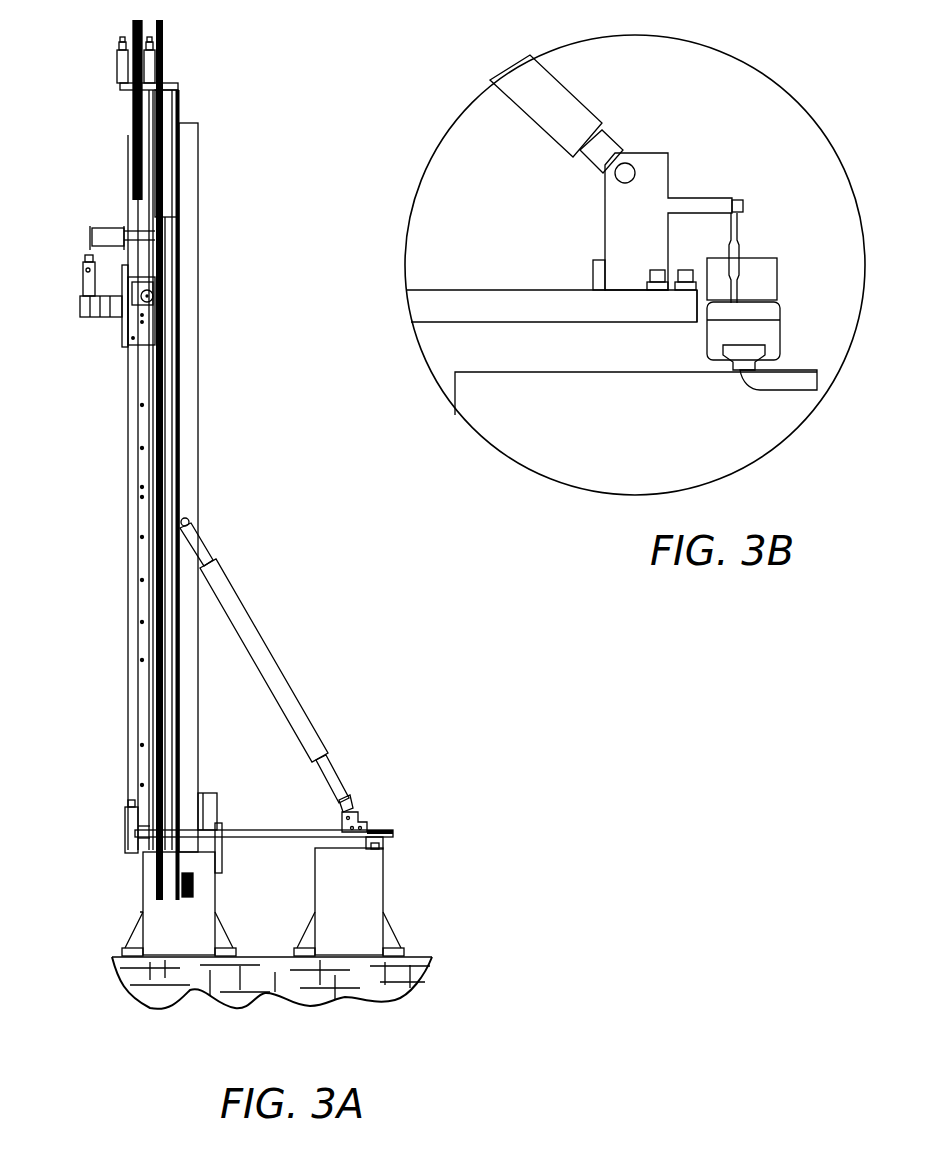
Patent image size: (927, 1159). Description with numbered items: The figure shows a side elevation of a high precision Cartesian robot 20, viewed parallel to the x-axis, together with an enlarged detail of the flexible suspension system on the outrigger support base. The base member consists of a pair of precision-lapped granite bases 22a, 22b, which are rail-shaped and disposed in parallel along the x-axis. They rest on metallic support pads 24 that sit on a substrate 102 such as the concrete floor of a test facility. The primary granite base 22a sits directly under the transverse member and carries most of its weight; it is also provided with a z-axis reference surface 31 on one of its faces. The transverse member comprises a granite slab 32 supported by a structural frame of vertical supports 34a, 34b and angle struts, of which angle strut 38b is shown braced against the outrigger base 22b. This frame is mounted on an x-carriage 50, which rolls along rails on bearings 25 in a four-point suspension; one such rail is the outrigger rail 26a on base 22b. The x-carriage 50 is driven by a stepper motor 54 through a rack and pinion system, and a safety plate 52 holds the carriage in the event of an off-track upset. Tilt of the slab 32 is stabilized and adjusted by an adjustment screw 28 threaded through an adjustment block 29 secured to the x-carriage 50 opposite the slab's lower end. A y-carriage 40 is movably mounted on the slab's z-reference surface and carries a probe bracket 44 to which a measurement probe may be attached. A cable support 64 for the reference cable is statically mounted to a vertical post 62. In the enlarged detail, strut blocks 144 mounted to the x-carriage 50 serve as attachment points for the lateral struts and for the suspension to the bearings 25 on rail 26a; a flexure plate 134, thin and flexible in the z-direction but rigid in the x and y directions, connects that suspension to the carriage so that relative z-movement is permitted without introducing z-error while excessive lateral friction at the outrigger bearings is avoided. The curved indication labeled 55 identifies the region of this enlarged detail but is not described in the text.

In FIG. 3A, the Cartesian robot 20 is at (282, 368).
In FIG. 3A, the primary granite base 22a is at (155, 922).
In FIG. 3A, the granite base 22b is at (375, 885).
In FIG. 3B, the granite base 22b is at (636, 406).
In FIG. 3A, the support pads 24 is at (400, 933).
In FIG. 3B, the bearings 25 is at (780, 340).
In FIG. 3A, the outrigger rail 26a is at (385, 846).
In FIG. 3B, the outrigger rail 26a is at (790, 385).
In FIG. 3A, the adjustment screw 28 is at (130, 807).
In FIG. 3A, the adjustment block 29 is at (137, 830).
In FIG. 3A, the z-axis reference surface 31 is at (143, 872).
In FIG. 3A, the granite slab 32 is at (193, 162).
In FIG. 3A, the vertical support 34a is at (178, 108).
In FIG. 3B, the vertical support 34b is at (525, 105).
In FIG. 3A, the angle strut 38b is at (290, 687).
In FIG. 3A, the y-carriage 40 is at (115, 328).
In FIG. 3A, the probe bracket 44 is at (80, 308).
In FIG. 3A, the x-carriage 50 is at (268, 833).
In FIG. 3B, the x-carriage 50 is at (537, 290).
In FIG. 3A, the safety plate 52 is at (222, 866).
In FIG. 3A, the stepper motor 54 is at (212, 795).
In FIG. 3A, the rotation direction 55 is at (382, 830).
In FIG. 3A, the vertical post 62 is at (178, 303).
In FIG. 3A, the cable support 64 is at (105, 227).
In FIG. 3A, the substrate 102 is at (332, 993).
In FIG. 3B, the flexure plate 134 is at (742, 250).
In FIG. 3B, the strut block 144 is at (650, 165).